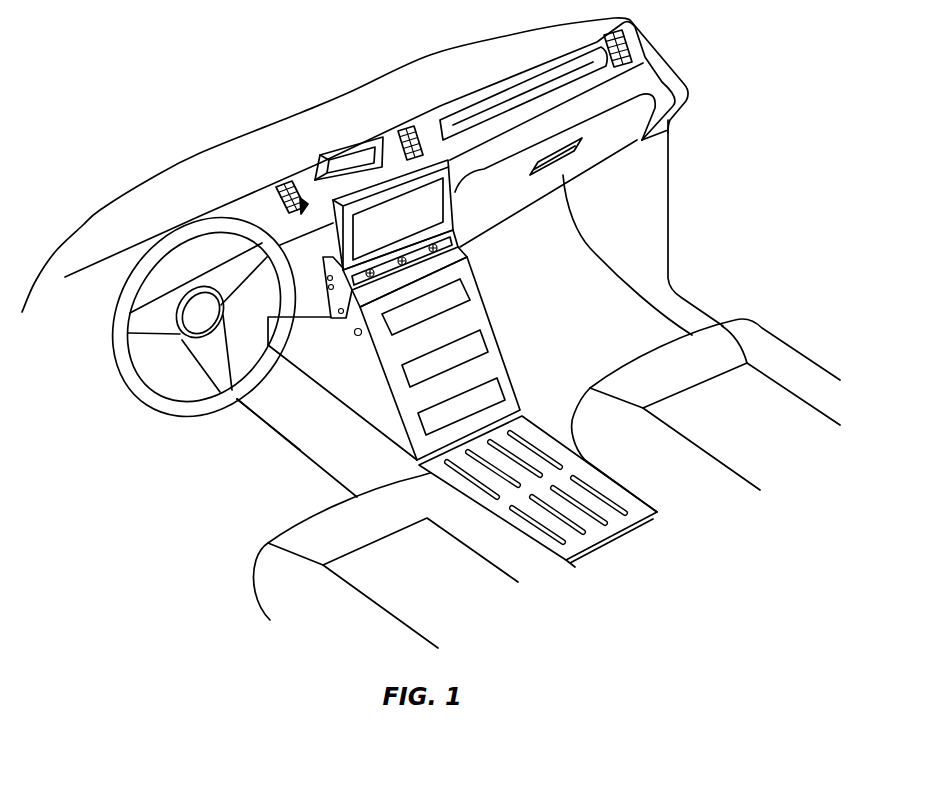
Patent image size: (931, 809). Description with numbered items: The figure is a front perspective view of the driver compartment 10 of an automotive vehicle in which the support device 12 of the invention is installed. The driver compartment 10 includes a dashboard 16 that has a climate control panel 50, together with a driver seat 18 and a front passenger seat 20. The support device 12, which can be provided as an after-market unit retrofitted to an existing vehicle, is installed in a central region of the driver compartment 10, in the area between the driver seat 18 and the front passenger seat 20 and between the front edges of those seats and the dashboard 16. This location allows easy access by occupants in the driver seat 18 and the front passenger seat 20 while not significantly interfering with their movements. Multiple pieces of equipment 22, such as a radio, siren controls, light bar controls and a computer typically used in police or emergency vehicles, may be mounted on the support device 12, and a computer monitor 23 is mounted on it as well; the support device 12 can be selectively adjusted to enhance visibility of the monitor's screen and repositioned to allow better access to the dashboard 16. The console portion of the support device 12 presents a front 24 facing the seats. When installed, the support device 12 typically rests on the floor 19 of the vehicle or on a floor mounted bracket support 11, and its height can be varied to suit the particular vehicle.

The driver compartment 10 is at (732, 223).
The floor mounted bracket support 11 is at (635, 508).
The support device 12 is at (307, 393).
The dashboard 16 is at (508, 88).
The driver seat 18 is at (425, 585).
The floor 19 is at (228, 490).
The front passenger seat 20 is at (727, 432).
The pieces of equipment 22 is at (457, 288).
The computer monitor 23 is at (400, 177).
The front 24 is at (418, 457).
The climate control panel 50 is at (447, 239).